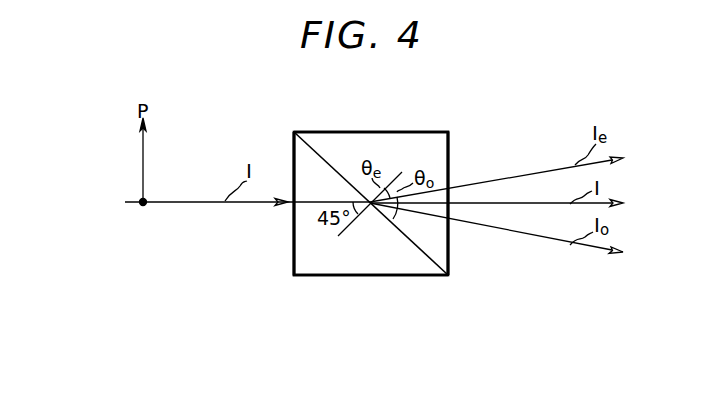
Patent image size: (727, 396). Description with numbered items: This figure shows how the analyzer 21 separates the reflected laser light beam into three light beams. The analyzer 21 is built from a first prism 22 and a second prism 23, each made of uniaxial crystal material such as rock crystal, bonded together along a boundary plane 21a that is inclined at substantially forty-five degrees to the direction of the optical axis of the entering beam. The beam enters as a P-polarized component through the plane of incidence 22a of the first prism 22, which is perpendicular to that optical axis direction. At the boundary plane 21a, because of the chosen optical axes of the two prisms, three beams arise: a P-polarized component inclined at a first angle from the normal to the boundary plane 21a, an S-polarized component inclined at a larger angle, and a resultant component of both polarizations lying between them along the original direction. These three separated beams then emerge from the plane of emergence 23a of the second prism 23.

The analyzer 21 is at (330, 133).
The boundary plane 21a is at (403, 238).
The first prism 22 is at (313, 268).
The plane of incidence 22a is at (294, 222).
The second prism 23 is at (387, 143).
The plane of emergence 23a is at (448, 160).